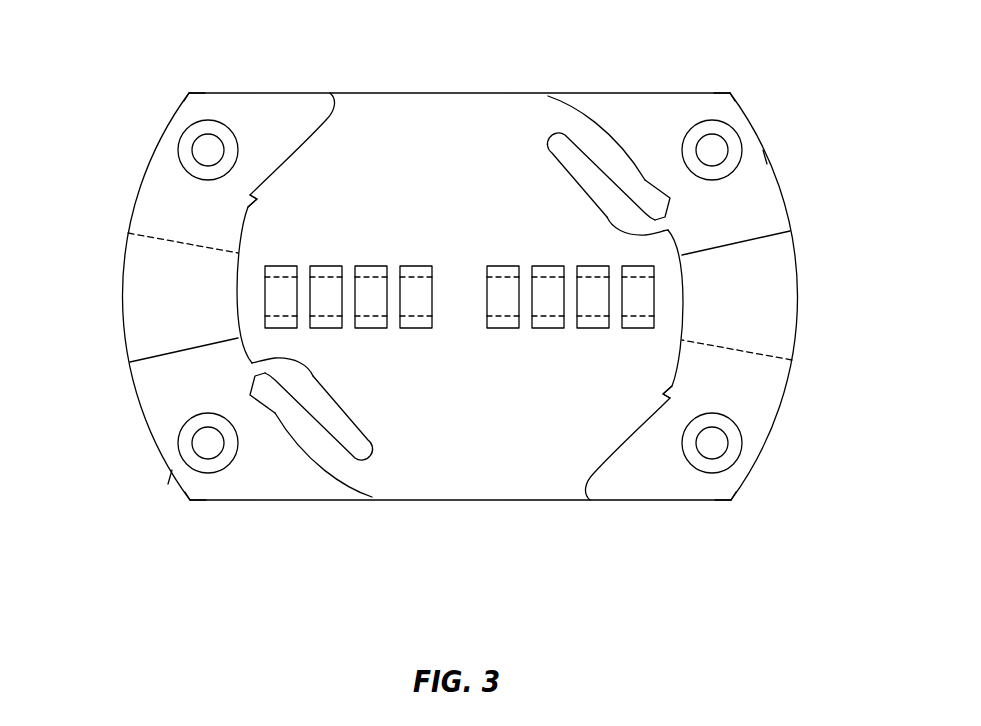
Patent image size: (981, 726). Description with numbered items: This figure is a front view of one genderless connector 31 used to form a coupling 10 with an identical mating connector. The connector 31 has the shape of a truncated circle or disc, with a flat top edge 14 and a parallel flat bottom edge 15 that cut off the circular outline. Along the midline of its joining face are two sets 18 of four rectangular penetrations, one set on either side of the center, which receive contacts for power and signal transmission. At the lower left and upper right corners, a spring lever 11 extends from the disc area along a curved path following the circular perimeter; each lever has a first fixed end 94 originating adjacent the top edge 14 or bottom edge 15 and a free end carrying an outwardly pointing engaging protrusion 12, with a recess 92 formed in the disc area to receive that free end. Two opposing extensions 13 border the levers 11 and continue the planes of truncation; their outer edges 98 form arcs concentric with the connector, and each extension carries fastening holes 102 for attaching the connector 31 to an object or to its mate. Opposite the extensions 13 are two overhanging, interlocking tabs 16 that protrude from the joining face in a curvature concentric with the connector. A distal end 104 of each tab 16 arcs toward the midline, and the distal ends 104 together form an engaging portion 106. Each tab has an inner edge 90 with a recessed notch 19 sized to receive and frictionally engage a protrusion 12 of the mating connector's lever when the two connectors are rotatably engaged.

The coupling 10 is at (466, 135).
The spring lever 11 is at (580, 133).
The engaging protrusion 12 is at (672, 207).
The extension 13 is at (735, 97).
The top edge 14 is at (459, 71).
The bottom edge 15 is at (460, 521).
The interlocking tab 16 is at (205, 312).
The set of penetrations 18 is at (545, 266).
The recessed notch 19 is at (256, 199).
The first genderless connector 31 is at (140, 52).
The inner edge 90 is at (302, 143).
The recess 92 is at (650, 180).
The first fixed end 94 is at (545, 103).
The outer edge 98 is at (765, 157).
The fastening hole 102 is at (192, 148).
The distal end 104 is at (760, 235).
The engaging portion 106 is at (778, 330).